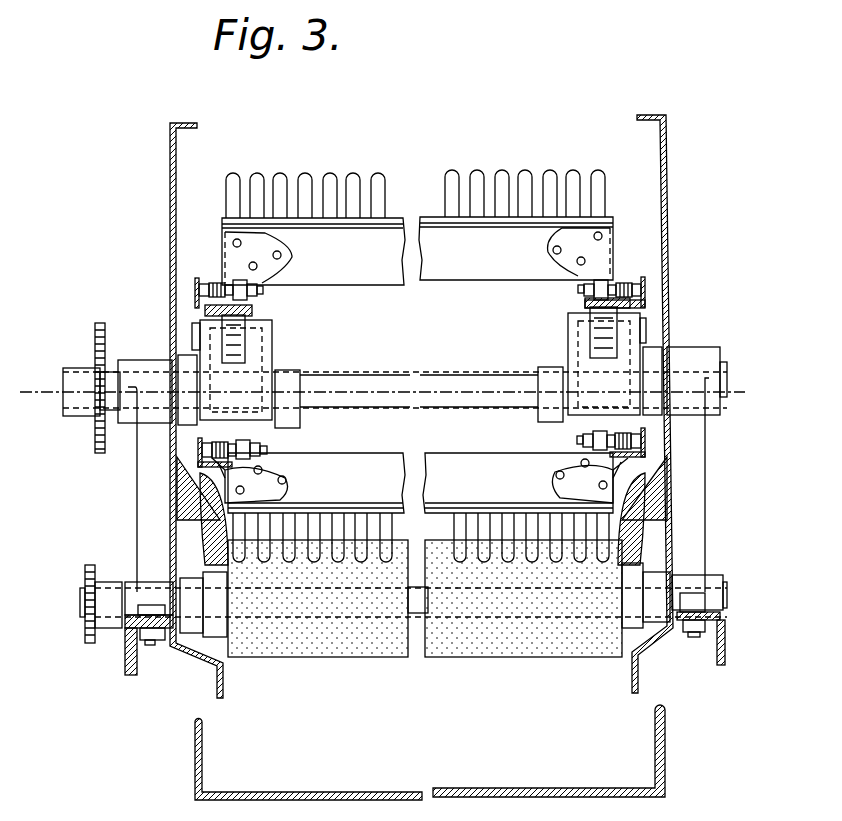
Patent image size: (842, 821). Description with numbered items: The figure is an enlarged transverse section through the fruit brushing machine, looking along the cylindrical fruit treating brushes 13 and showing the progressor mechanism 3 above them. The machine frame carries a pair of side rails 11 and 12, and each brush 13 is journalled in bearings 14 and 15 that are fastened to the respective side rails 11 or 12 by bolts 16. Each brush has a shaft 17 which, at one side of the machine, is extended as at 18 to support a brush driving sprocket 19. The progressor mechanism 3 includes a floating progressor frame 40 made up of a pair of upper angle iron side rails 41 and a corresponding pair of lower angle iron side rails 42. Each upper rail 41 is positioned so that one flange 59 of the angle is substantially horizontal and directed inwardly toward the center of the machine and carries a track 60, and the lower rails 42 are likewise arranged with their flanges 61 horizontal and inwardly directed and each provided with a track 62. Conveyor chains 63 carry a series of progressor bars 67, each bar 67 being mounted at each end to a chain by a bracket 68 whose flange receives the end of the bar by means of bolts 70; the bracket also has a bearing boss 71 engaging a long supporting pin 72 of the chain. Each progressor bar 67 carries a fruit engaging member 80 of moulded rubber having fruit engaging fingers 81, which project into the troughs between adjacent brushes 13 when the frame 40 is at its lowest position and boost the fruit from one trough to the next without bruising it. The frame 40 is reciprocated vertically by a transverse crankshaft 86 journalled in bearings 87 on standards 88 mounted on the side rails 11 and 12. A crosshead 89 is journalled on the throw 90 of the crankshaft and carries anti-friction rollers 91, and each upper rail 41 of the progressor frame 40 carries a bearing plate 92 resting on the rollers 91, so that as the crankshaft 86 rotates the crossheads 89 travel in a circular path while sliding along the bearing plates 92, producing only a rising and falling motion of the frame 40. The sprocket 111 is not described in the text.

The progressor mechanism 3 is at (420, 183).
The side rail 11 is at (125, 668).
The side rail 12 is at (718, 660).
The fruit treating brush 13 is at (336, 652).
The bearing 14 is at (130, 585).
The bearing 15 is at (712, 578).
The bolt 16 is at (152, 604).
The brush shaft 17 is at (420, 620).
The shaft extension 18 is at (82, 602).
The brush driving sprocket 19 is at (88, 642).
The progressor frame 40 is at (648, 292).
The upper angle iron side rail 41 is at (198, 286).
The lower angle iron side rail 42 is at (200, 445).
The flange 59 is at (607, 298).
The track 60 is at (205, 311).
The flange 61 is at (200, 495).
The track 62 is at (275, 470).
The conveyor chain 63 is at (222, 268).
The progressor bar 67 is at (368, 460).
The bracket 68 is at (272, 238).
The bolt 70 is at (565, 250).
The bearing boss 71 is at (262, 296).
The supporting pin 72 is at (578, 284).
The fruit engaging member 80 is at (333, 173).
The fruit engaging finger 81 is at (526, 172).
The crankshaft 86 is at (62, 398).
The bearing 87 is at (145, 362).
The standard 88 is at (137, 484).
The crosshead 89 is at (268, 356).
The throw 90 is at (355, 388).
The roller 91 is at (240, 335).
The bearing plate 92 is at (252, 312).
The sprocket 111 is at (98, 328).